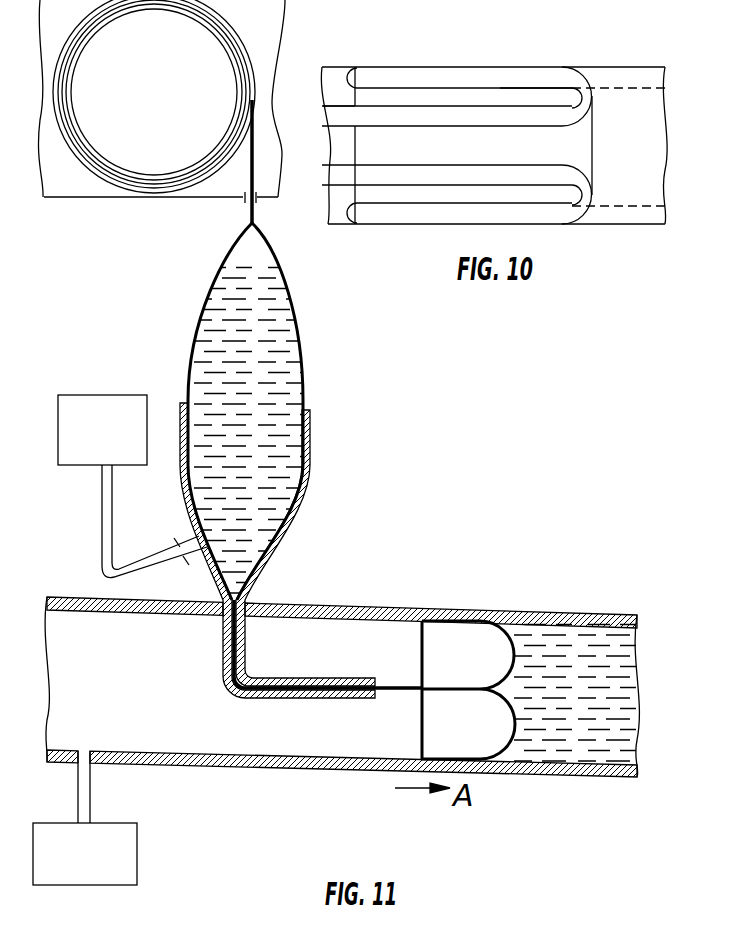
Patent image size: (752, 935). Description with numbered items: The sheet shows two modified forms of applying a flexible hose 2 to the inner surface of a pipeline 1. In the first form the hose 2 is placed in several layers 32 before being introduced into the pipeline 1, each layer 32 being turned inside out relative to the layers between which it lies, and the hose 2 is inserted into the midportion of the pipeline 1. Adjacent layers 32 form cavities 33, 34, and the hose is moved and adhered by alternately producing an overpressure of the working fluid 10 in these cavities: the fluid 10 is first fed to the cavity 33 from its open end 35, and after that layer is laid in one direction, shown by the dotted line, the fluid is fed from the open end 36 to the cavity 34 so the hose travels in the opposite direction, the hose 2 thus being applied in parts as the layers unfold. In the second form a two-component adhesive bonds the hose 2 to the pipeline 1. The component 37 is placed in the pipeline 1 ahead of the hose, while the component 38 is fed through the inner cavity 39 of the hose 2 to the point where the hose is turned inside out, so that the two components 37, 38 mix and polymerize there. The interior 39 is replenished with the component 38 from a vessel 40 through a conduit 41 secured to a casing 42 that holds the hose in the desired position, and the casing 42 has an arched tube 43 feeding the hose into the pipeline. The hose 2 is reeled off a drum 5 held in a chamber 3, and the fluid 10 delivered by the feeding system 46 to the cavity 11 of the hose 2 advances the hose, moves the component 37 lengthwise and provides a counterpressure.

In FIG. 10, the pipeline 1 is at (655, 68).
In FIG. 11, the pipeline 1 is at (345, 607).
In FIG. 10, the flexible hose 2 is at (348, 93).
In FIG. 11, the flexible hose 2 is at (512, 647).
In FIG. 11, the chamber 3 is at (272, 18).
In FIG. 11, the drum 5 is at (206, 67).
In FIG. 11, the fluid 10 is at (283, 622).
In FIG. 11, the cavity 11 is at (452, 650).
In FIG. 10, the layers 32 is at (393, 117).
In FIG. 10, the cavity 33 is at (541, 101).
In FIG. 10, the cavity 34 is at (598, 78).
In FIG. 10, the open end 35 is at (369, 101).
In FIG. 10, the open end 36 is at (651, 222).
In FIG. 11, the component 37 is at (582, 665).
In FIG. 11, the component 38 is at (287, 335).
In FIG. 11, the inner cavity 39 is at (204, 333).
In FIG. 11, the vessel 40 is at (108, 405).
In FIG. 11, the conduit 41 is at (140, 566).
In FIG. 11, the casing 42 is at (305, 489).
In FIG. 11, the arched tube 43 is at (360, 678).
In FIG. 11, the system for feeding the fluid 46 is at (124, 852).